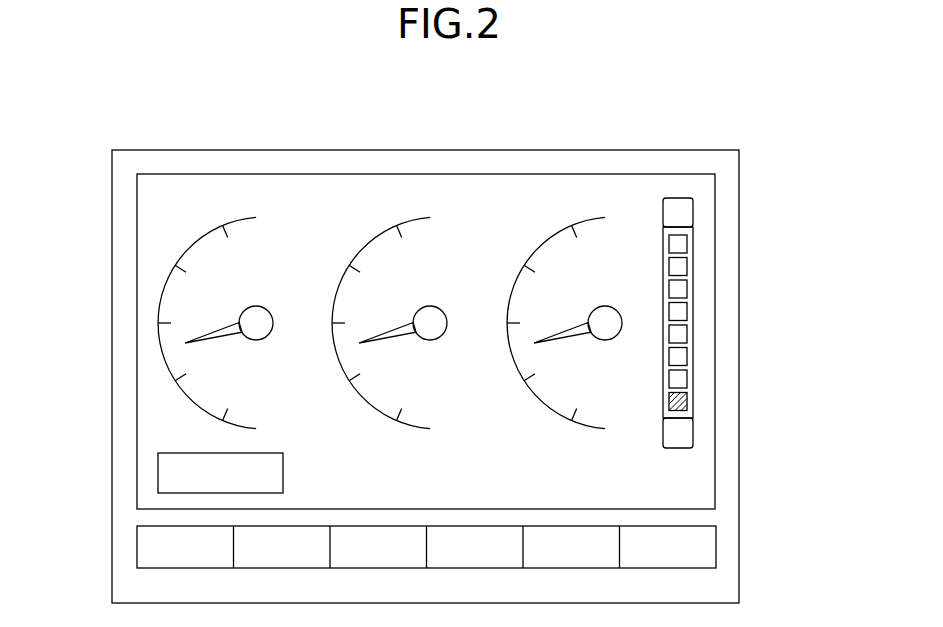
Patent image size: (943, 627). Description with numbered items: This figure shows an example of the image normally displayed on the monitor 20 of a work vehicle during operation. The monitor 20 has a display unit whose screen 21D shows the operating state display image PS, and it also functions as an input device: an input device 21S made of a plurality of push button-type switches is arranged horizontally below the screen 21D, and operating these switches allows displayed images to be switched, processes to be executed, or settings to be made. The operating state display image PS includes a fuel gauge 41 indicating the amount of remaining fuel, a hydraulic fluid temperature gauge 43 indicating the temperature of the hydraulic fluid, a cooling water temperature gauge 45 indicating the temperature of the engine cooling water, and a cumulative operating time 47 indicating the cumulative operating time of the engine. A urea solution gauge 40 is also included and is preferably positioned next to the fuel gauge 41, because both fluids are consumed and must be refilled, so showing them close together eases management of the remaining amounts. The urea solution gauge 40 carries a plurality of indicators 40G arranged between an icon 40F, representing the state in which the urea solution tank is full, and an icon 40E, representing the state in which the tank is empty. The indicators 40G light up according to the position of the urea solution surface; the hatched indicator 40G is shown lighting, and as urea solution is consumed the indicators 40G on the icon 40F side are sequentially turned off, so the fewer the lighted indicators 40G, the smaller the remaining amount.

The monitor 20 is at (152, 150).
The screen 21D is at (137, 210).
The input device 21S is at (730, 547).
The fuel gauge 41 is at (581, 203).
The hydraulic fluid temperature gauge 43 is at (404, 203).
The cooling water temperature gauge 45 is at (232, 203).
The cumulative operating time 47 is at (150, 469).
The operating state display image PS is at (509, 193).
The urea solution gauge 40 is at (757, 325).
The icon 40F is at (693, 212).
The indicators 40G is at (693, 236).
The icon 40E is at (733, 433).